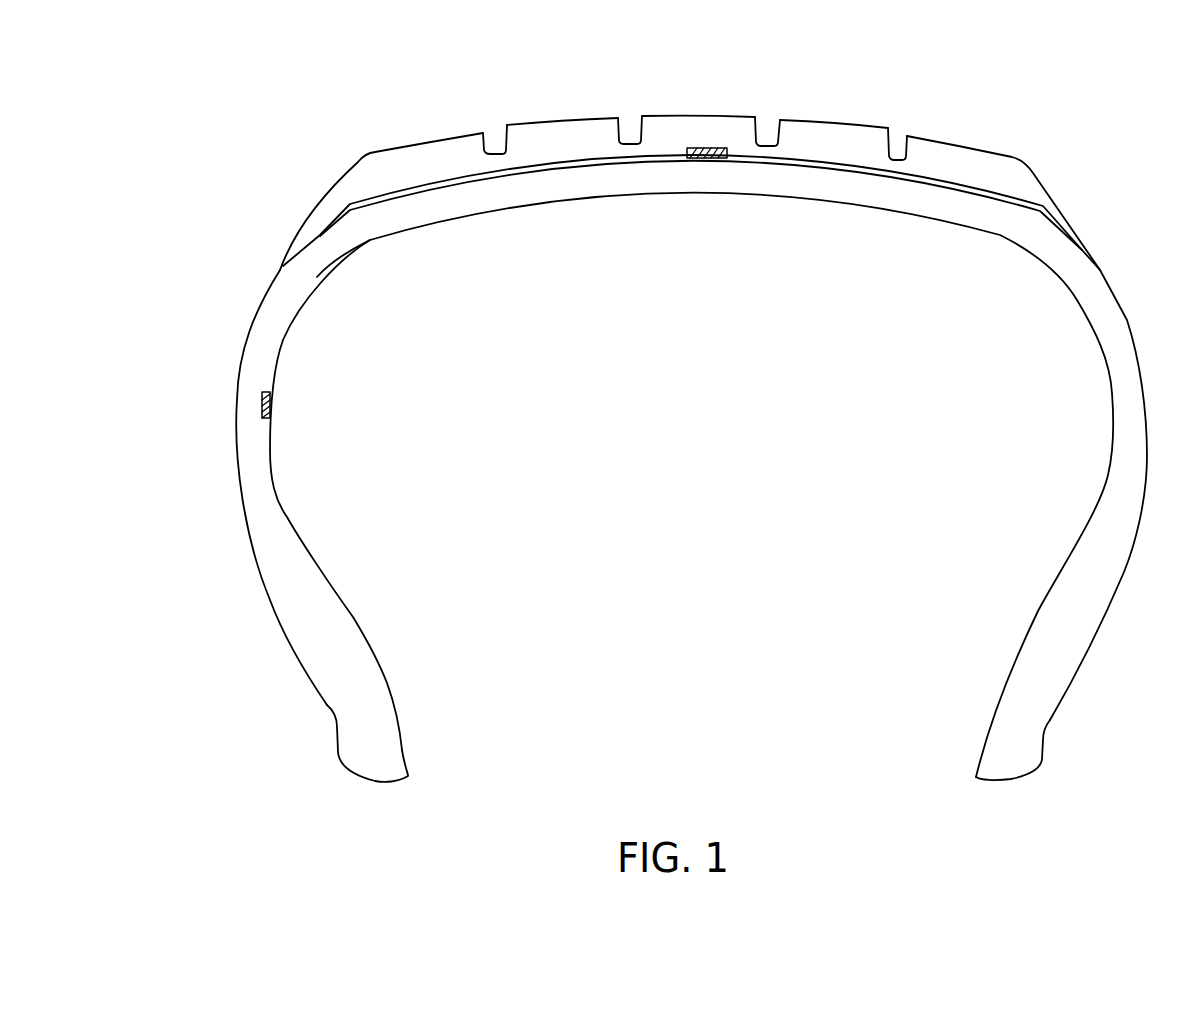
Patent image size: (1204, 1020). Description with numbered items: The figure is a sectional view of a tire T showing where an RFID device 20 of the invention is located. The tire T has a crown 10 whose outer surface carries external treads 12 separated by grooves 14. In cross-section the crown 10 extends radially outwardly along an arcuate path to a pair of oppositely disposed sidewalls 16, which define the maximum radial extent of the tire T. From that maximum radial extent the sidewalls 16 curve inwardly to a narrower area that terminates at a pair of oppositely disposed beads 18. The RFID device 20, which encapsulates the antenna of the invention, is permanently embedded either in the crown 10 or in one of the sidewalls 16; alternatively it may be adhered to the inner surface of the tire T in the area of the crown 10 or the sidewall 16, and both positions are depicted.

The tire T is at (1082, 213).
The crown 10 is at (608, 205).
The external treads 12 is at (557, 124).
The grooves 14 is at (628, 128).
The sidewalls 16 is at (277, 357).
The beads 18 is at (387, 735).
The RFID device 20 is at (707, 162).